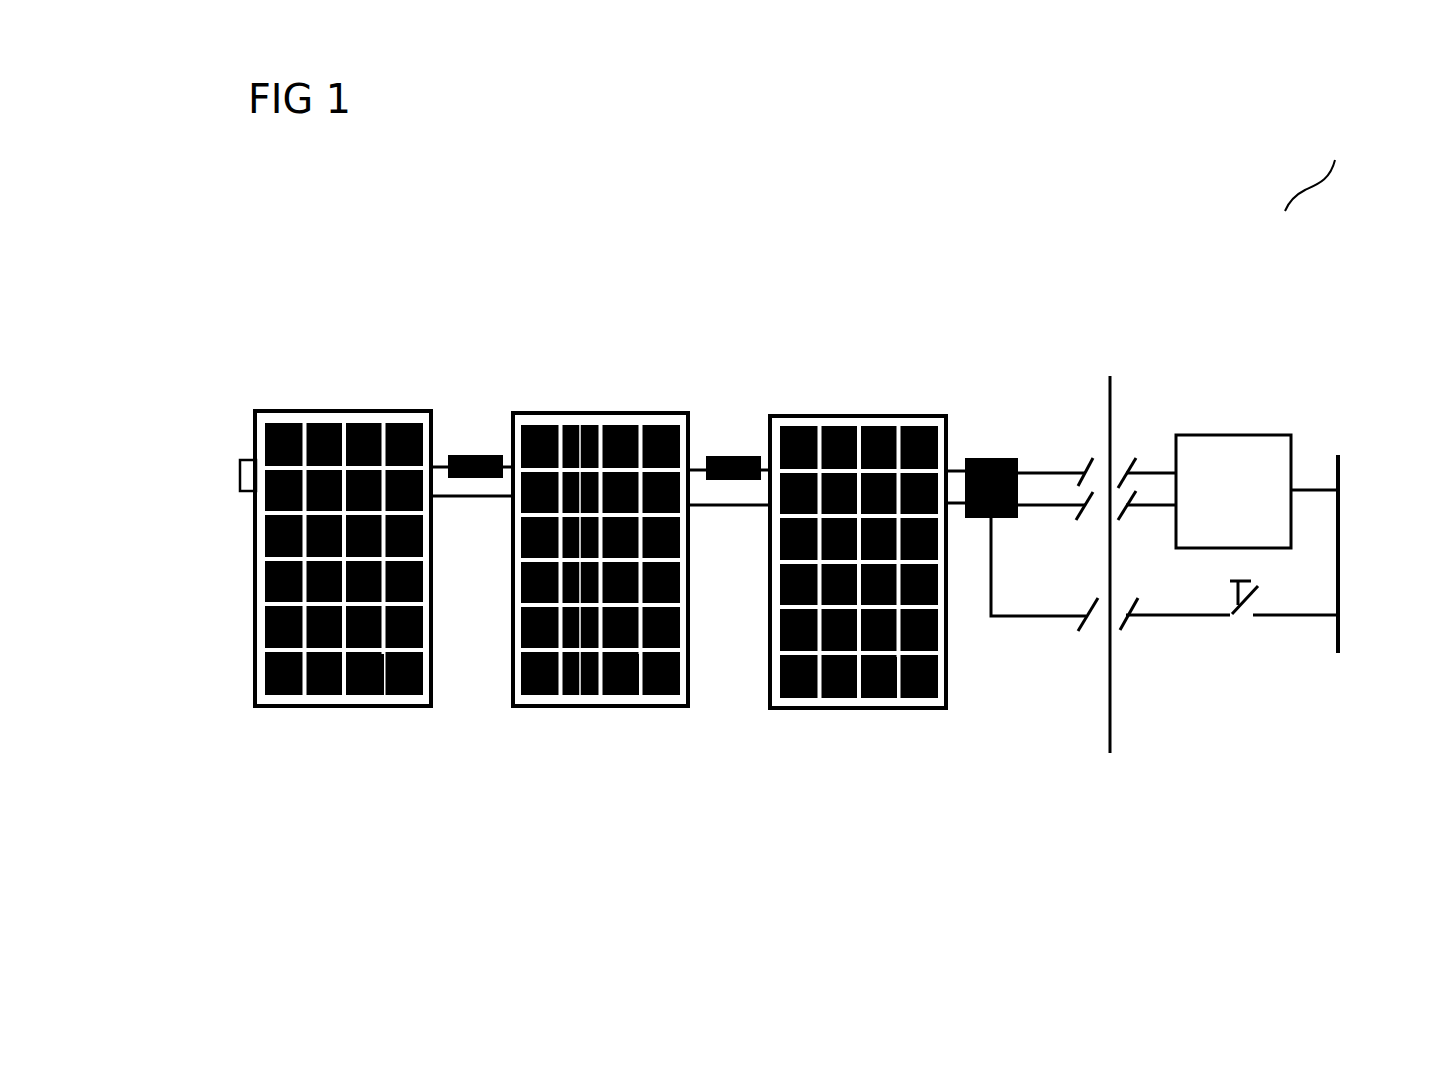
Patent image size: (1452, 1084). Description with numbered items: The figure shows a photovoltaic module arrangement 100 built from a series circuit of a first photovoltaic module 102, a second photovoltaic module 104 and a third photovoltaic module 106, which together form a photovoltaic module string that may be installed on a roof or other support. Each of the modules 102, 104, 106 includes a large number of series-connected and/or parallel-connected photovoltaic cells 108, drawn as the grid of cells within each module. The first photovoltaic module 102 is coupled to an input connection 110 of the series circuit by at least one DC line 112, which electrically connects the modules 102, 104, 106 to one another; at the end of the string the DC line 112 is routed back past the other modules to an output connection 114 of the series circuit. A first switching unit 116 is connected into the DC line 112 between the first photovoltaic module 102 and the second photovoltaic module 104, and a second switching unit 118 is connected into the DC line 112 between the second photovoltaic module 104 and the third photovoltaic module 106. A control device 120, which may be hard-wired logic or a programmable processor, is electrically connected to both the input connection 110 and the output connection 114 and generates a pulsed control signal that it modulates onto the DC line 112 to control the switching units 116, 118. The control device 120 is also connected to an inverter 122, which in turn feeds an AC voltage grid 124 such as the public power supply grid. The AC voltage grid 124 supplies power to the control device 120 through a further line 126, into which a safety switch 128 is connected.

The photovoltaic module arrangement 100 is at (1325, 172).
The first photovoltaic module 102 is at (826, 408).
The second photovoltaic module 104 is at (568, 405).
The third photovoltaic module 106 is at (316, 405).
The photovoltaic cells 108 is at (268, 682).
The input connection 110 is at (950, 462).
The DC line 112 is at (238, 452).
The output connection 114 is at (950, 463).
The first switching unit 116 is at (738, 448).
The second switching unit 118 is at (478, 447).
The control device 120 is at (990, 450).
The inverter 122 is at (1217, 447).
The AC voltage grid 124 is at (1327, 532).
The further line 126 is at (1040, 608).
The safety switch 128 is at (1230, 610).